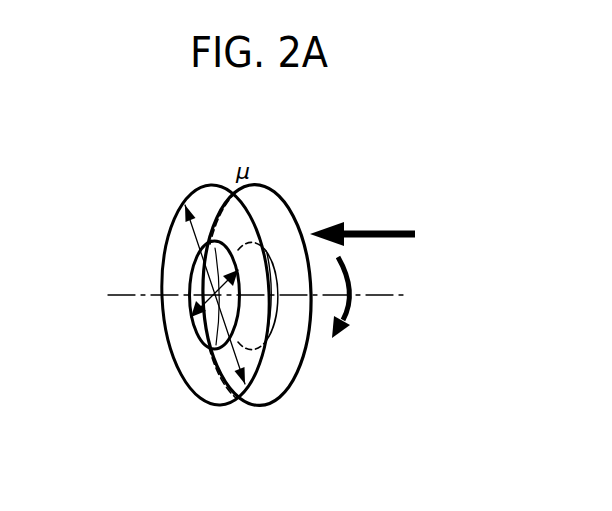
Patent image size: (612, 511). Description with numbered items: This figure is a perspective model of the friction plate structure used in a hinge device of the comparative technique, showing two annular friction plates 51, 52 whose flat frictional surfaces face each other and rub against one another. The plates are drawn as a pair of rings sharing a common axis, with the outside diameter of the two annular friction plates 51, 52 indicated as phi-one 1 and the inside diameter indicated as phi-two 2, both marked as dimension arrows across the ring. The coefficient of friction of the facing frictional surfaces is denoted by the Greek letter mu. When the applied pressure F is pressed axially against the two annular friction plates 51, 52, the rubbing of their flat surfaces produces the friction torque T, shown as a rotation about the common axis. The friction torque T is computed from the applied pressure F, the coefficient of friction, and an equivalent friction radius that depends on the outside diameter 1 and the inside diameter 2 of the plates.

The annular friction plate 51 is at (280, 198).
The annular friction plate 52 is at (203, 190).
The outside diameter φ 1 is at (198, 243).
The inside diameter φ 2 is at (208, 346).
The applied pressure F is at (362, 221).
The friction torque T is at (351, 297).